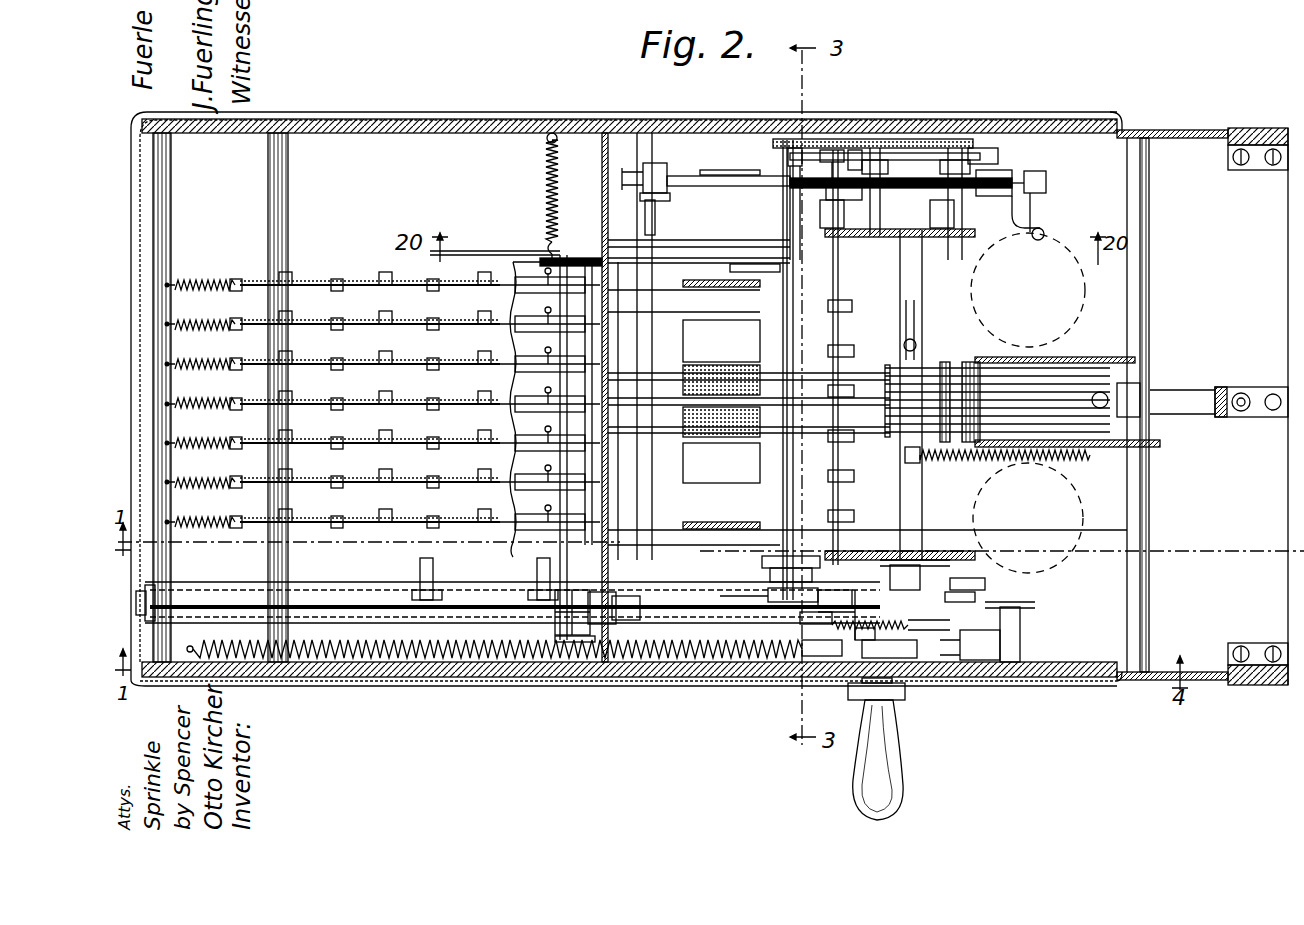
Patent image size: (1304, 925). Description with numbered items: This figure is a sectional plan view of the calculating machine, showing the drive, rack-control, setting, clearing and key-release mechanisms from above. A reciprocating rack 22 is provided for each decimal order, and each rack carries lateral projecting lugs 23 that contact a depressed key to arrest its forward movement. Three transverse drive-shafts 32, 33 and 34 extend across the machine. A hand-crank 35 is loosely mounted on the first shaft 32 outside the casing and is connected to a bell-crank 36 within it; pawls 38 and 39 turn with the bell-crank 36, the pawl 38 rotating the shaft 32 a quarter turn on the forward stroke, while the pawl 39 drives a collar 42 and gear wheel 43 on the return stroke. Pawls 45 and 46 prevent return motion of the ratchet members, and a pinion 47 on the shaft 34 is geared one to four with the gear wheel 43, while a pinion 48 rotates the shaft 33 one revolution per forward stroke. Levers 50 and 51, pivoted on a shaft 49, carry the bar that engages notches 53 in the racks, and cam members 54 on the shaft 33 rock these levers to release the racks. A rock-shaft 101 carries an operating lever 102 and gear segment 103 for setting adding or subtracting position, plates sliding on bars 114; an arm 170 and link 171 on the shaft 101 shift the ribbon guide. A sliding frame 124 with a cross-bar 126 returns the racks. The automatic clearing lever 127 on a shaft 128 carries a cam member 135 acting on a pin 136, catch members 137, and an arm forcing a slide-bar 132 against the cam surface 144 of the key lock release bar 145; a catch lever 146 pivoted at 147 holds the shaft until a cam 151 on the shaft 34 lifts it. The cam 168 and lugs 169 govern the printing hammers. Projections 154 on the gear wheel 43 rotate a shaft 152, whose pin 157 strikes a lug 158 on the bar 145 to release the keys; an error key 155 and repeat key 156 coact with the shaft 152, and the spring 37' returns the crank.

The reciprocating rack 22 is at (385, 283).
The lateral projecting lugs 23 is at (483, 402).
The key lock release bar 145 is at (545, 260).
The cam surface 144 is at (560, 243).
The catch lever 146 is at (985, 138).
The cam 151 is at (998, 156).
The pinion 48 is at (800, 148).
The pin 136 is at (834, 150).
The cam member 135 is at (860, 150).
The automatic clearing lever 127 is at (860, 198).
The arm 170 is at (1040, 195).
The link 171 is at (1044, 232).
The bars 114 is at (918, 238).
The rock-shaft 101 is at (660, 175).
The pivot 147 is at (770, 170).
The gear segment 103 is at (712, 175).
The operating lever 102 is at (665, 197).
The slide-bar 132 is at (680, 232).
The lever 51 is at (690, 247).
The cam members 54 is at (748, 266).
The cross-bar 126 is at (660, 298).
The frame 124 is at (830, 305).
The shaft 128 is at (832, 345).
The catch members 137 is at (845, 385).
The drive-shaft 33 is at (785, 500).
The lug 169 is at (900, 375).
The cam 168 is at (978, 360).
The drive-shaft 34 is at (970, 505).
The drive-shaft 32 is at (900, 498).
The main shaft 37' is at (508, 611).
The repeat key 156 is at (450, 560).
The error key 155 is at (538, 573).
The pin 157 is at (568, 600).
The lug 158 is at (582, 600).
The shaft 49 is at (640, 595).
The lever 50 is at (762, 570).
The shaft 152 is at (768, 600).
The pawl 39 is at (848, 598).
The gear wheel 43 is at (900, 596).
The collar 42 is at (880, 618).
The notches 53 is at (817, 622).
The pawl 38 is at (905, 645).
The pinion 47 is at (985, 585).
The projections 154 is at (973, 600).
The pawl 45 is at (1020, 606).
The pawl 46 is at (1000, 640).
The bell-crank 36 is at (848, 690).
The hand-crank 35 is at (898, 712).